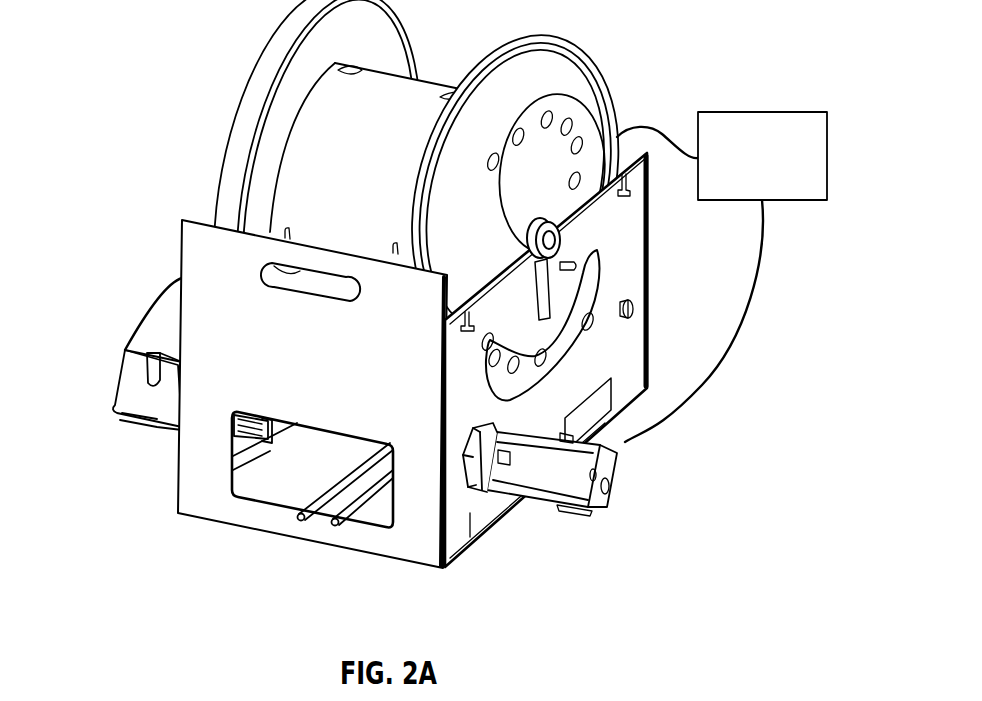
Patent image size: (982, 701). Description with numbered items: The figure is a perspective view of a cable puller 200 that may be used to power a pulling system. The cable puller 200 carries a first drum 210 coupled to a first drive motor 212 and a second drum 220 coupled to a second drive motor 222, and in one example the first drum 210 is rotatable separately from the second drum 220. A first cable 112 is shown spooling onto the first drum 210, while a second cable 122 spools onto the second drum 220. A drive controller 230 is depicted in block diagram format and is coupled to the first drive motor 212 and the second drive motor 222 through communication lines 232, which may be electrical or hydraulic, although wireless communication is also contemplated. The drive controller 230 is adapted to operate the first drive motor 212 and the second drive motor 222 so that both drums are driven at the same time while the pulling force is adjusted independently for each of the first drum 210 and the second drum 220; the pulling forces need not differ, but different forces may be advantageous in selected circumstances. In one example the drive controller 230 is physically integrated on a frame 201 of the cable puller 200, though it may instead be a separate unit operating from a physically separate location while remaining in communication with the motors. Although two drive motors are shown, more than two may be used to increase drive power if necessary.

The cable puller 200 is at (595, 568).
The frame 201 is at (640, 273).
The first drum 210 is at (358, 123).
The second drum 220 is at (513, 43).
The second drive motor 222 is at (612, 493).
The drive controller 230 is at (762, 156).
The communication lines 232 is at (153, 303).
The first drive motor 212 is at (128, 389).
The first cable 112 is at (300, 517).
The second cable 122 is at (347, 523).